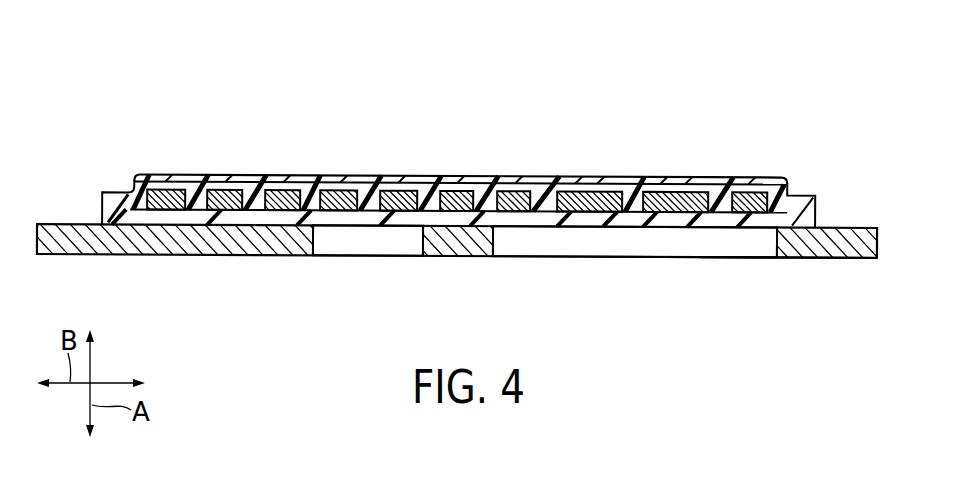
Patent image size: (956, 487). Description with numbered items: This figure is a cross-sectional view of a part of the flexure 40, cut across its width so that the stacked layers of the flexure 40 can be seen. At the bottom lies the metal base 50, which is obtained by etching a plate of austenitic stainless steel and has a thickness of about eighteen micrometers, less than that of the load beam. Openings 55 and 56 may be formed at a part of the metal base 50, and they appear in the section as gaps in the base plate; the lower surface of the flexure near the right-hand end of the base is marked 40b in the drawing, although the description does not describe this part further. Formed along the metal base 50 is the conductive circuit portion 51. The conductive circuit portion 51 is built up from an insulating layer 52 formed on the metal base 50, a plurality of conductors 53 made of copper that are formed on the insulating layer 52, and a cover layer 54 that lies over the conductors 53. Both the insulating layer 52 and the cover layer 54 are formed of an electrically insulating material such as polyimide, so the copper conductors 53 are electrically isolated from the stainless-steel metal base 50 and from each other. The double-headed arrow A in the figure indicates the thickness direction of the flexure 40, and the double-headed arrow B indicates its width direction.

The flexure 40 is at (553, 76).
The lower surface of device 40b is at (800, 262).
The metal base 50 is at (180, 246).
The conductive circuit portion 51 is at (313, 160).
The insulating layer 52 is at (541, 220).
The conductors 53 is at (272, 190).
The cover layer 54 is at (547, 192).
The opening 55 is at (367, 247).
The opening 56 is at (636, 247).